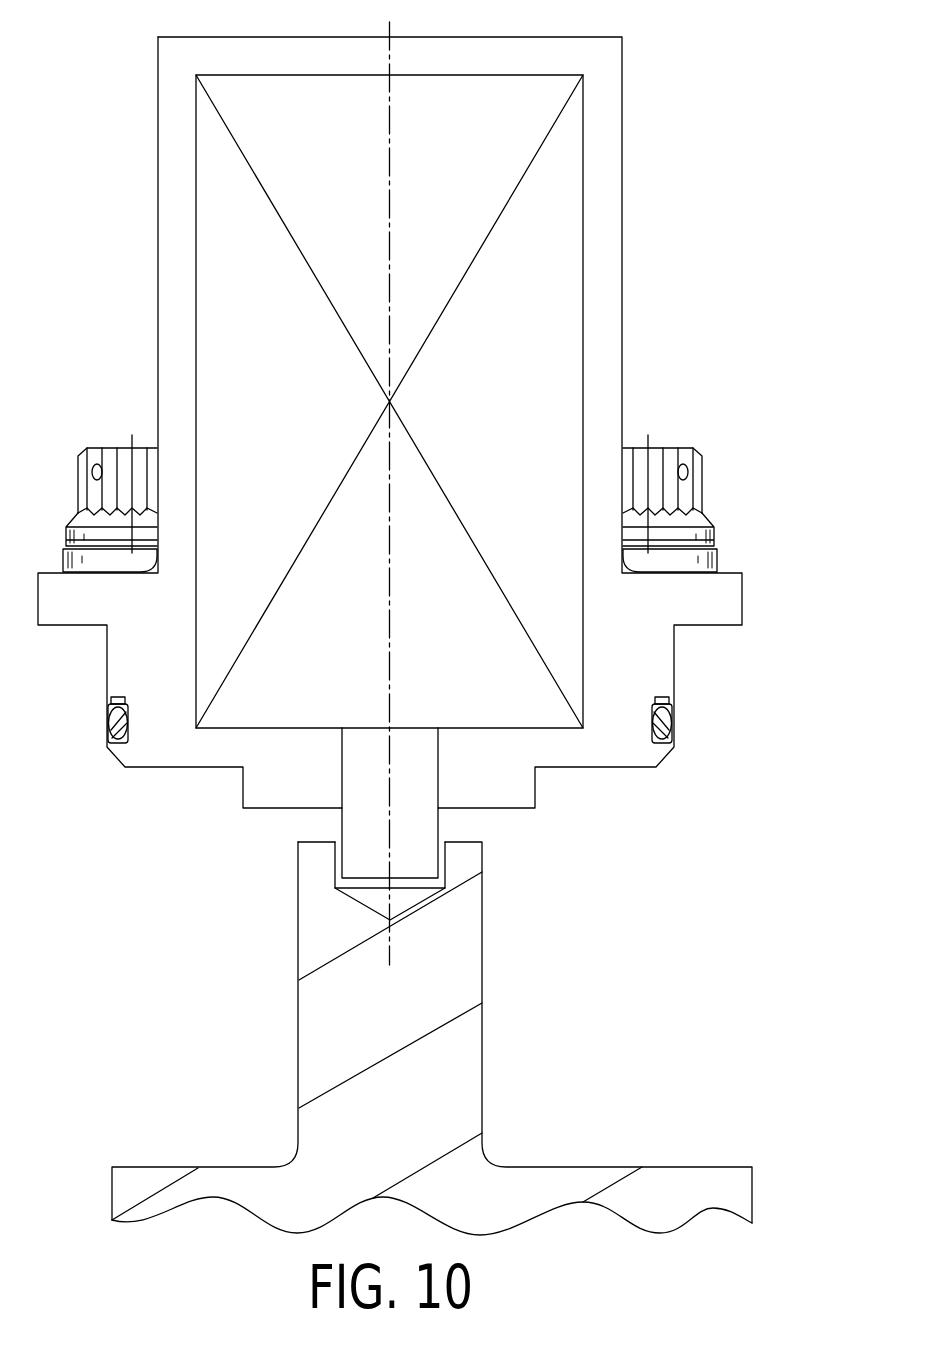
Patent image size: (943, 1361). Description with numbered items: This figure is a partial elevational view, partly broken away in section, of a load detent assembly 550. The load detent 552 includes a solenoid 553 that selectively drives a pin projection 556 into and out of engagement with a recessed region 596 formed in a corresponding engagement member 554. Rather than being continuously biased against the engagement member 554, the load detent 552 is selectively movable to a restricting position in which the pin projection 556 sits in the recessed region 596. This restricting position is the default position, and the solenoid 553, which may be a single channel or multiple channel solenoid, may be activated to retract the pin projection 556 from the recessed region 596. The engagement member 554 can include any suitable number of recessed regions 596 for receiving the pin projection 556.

The load detent assembly 550 is at (436, 442).
The load detent 552 is at (632, 208).
The solenoid 553 is at (588, 113).
The engagement member 554 is at (467, 866).
The pin projection 556 is at (444, 767).
The recessed region 596 is at (328, 862).